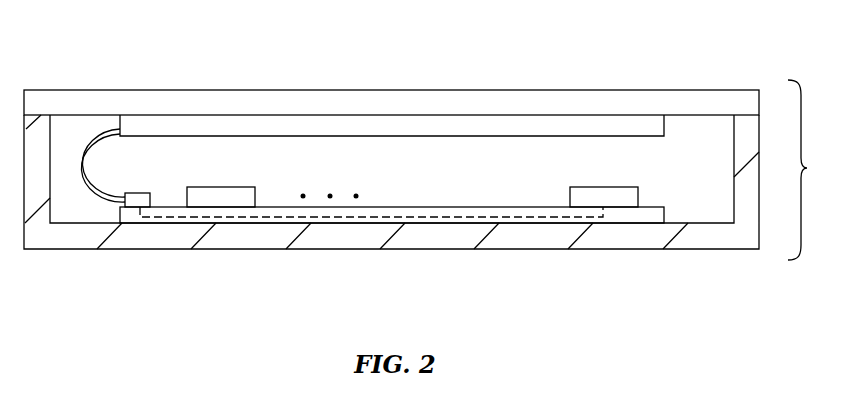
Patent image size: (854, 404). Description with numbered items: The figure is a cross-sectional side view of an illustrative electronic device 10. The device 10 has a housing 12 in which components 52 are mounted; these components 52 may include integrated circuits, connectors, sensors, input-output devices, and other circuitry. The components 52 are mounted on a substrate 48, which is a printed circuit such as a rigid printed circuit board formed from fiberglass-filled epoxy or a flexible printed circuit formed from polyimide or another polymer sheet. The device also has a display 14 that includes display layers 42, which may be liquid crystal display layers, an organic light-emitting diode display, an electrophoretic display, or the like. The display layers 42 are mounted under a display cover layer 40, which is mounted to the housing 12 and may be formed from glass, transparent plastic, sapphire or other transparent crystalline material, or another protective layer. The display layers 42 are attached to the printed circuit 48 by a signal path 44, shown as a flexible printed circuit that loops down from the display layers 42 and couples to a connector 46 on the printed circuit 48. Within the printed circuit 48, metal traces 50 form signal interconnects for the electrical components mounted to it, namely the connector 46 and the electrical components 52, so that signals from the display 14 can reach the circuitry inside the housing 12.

The electronic device 10 is at (810, 170).
The housing 12 is at (698, 240).
The display 14 is at (391, 80).
The display cover layer 40 is at (548, 100).
The display layers 42 is at (626, 125).
The signal path 44 is at (88, 143).
The connector 46 is at (138, 200).
The substrate 48 is at (405, 205).
The metal traces 50 is at (352, 220).
The components 52 is at (223, 195).